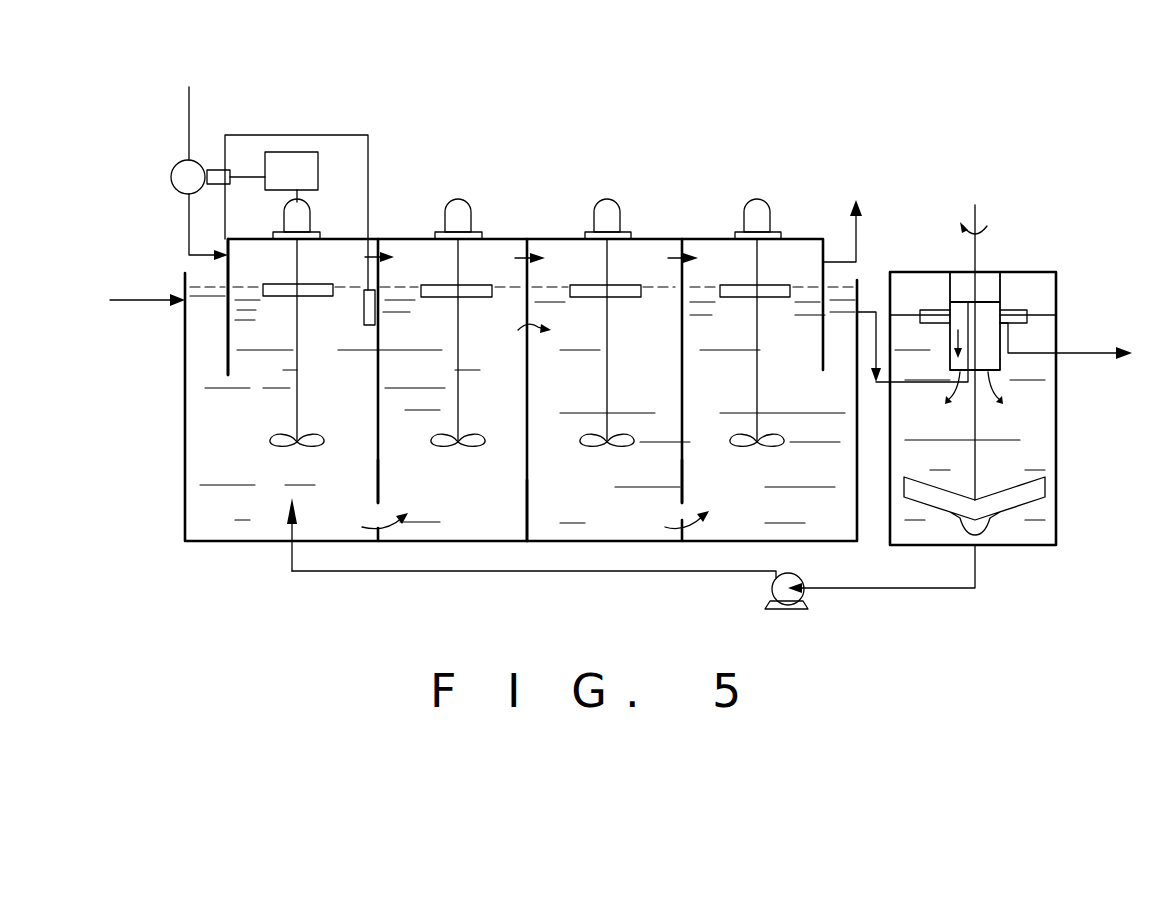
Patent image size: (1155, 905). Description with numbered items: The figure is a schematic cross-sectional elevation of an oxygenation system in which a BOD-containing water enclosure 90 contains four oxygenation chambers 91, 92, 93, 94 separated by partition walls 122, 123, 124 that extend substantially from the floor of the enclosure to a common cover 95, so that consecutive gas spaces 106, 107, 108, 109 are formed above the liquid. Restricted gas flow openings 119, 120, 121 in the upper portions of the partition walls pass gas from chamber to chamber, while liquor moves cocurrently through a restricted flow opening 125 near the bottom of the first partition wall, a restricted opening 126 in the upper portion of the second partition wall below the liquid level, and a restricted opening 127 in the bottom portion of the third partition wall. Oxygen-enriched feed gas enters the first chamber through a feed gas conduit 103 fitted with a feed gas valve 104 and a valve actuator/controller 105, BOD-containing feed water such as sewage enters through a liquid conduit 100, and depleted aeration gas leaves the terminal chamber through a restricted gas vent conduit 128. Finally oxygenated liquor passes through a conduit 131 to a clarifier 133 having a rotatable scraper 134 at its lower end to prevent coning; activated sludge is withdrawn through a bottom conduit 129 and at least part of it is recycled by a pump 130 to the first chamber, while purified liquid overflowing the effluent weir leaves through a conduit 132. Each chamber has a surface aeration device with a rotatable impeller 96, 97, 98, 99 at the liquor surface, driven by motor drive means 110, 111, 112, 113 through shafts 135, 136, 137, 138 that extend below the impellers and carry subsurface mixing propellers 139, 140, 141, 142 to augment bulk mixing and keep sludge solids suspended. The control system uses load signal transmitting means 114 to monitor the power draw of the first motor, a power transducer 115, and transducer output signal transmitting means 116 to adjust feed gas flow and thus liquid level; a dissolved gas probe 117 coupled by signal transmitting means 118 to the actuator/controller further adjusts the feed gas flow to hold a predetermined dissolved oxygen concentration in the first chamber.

The BOD-containing water enclosure 90 is at (185, 476).
The first oxygenation chamber 91 is at (346, 401).
The second oxygenation chamber 92 is at (506, 401).
The third oxygenation chamber 93 is at (653, 401).
The fourth oxygenation chamber 94 is at (798, 401).
The common cover 95 is at (515, 238).
The rotatable impeller 96 is at (275, 298).
The rotatable impeller 97 is at (442, 298).
The rotatable impeller 98 is at (590, 300).
The rotatable impeller 99 is at (738, 300).
The liquid conduit 100 is at (150, 298).
The feed gas conduit 103 is at (189, 232).
The feed gas valve 104 is at (173, 166).
The valve actuator/controller 105 is at (220, 186).
The gas space 106 is at (262, 255).
The gas space 107 is at (400, 236).
The gas space 108 is at (561, 238).
The gas space 109 is at (713, 236).
The motor drive means 110 is at (310, 210).
The motor drive means 111 is at (466, 200).
The motor drive means 112 is at (612, 202).
The motor drive means 113 is at (760, 200).
The load signal transmitting means 114 is at (290, 195).
The power transducer 115 is at (318, 160).
The transducer output signal transmitting means 116 is at (244, 175).
The dissolved gas probe 117 is at (363, 318).
The signal transmitting means 118 is at (368, 152).
The restricted gas flow opening 119 is at (362, 257).
The restricted gas flow opening 120 is at (524, 259).
The restricted gas flow opening 121 is at (672, 259).
The partition wall 122 is at (378, 472).
The partition wall 123 is at (526, 508).
The partition wall 124 is at (682, 500).
The restricted flow opening 125 is at (370, 508).
The restricted opening 126 is at (518, 330).
The restricted opening 127 is at (672, 530).
The restricted gas vent conduit 128 is at (856, 250).
The bottom conduit 129 is at (889, 587).
The pump 130 is at (784, 574).
The conduit 131 is at (876, 310).
The conduit 132 is at (1100, 350).
The clarifier 133 is at (1040, 425).
The rotatable scraper 134 is at (1015, 492).
The shaft 135 is at (298, 258).
The shaft 136 is at (460, 255).
The shaft 137 is at (612, 252).
The shaft 138 is at (762, 256).
The subsurface mixing propeller 139 is at (276, 443).
The subsurface mixing propeller 140 is at (445, 447).
The subsurface mixing propeller 141 is at (592, 445).
The subsurface mixing propeller 142 is at (742, 445).